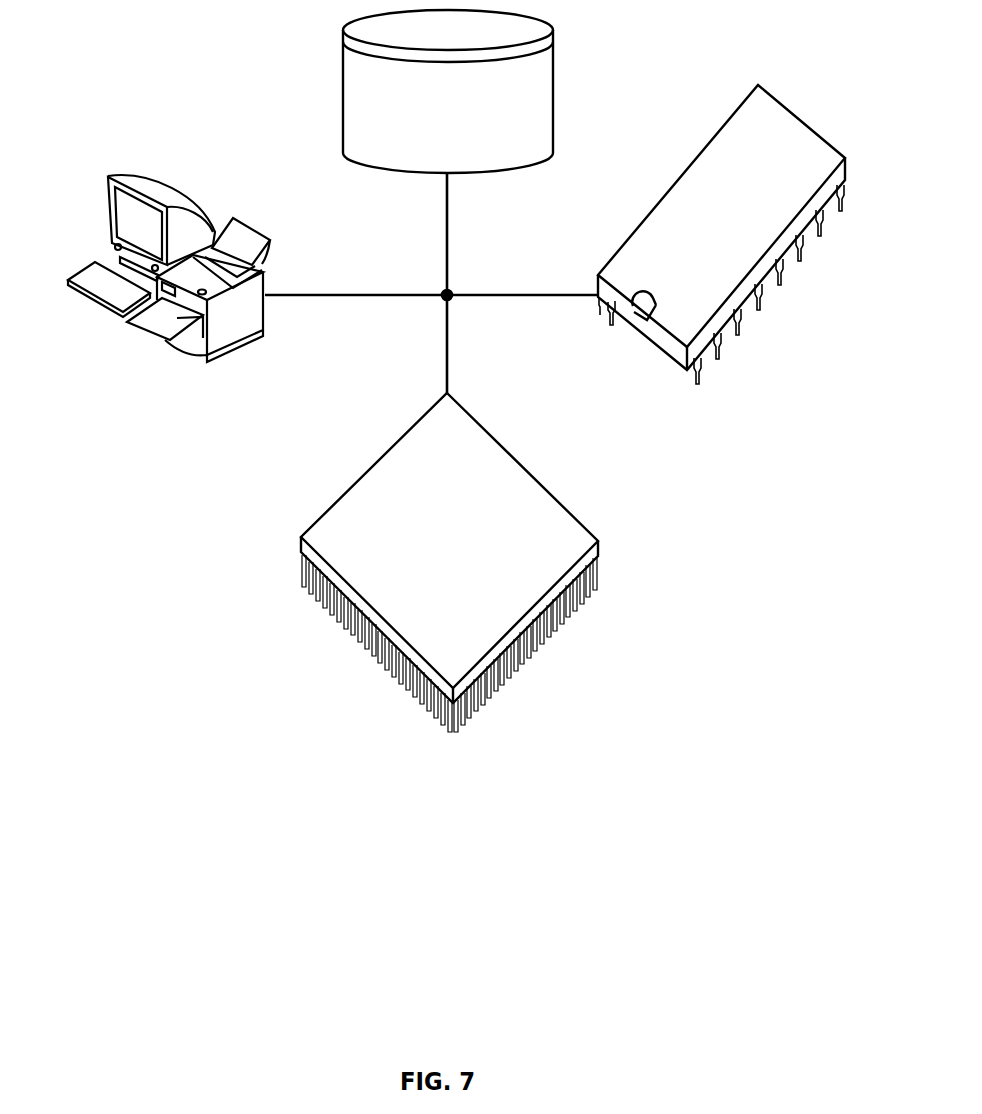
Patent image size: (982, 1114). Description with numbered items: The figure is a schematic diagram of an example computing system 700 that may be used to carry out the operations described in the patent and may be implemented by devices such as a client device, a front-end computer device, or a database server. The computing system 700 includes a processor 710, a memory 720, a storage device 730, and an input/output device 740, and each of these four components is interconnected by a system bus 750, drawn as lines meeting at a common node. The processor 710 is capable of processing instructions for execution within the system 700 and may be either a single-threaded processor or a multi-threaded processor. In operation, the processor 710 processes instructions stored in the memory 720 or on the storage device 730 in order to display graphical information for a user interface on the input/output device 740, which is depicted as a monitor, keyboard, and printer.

The computing system 700 is at (134, 655).
The processor 710 is at (373, 465).
The memory 720 is at (678, 180).
The storage device 730 is at (342, 92).
The input/output device 740 is at (108, 178).
The system bus 750 is at (390, 295).